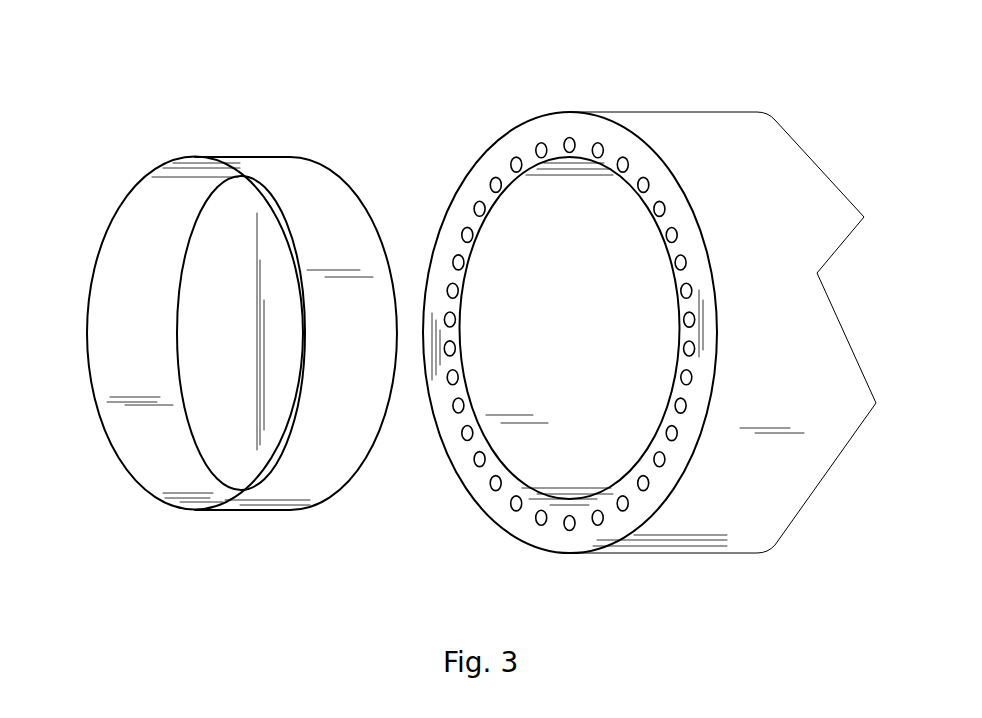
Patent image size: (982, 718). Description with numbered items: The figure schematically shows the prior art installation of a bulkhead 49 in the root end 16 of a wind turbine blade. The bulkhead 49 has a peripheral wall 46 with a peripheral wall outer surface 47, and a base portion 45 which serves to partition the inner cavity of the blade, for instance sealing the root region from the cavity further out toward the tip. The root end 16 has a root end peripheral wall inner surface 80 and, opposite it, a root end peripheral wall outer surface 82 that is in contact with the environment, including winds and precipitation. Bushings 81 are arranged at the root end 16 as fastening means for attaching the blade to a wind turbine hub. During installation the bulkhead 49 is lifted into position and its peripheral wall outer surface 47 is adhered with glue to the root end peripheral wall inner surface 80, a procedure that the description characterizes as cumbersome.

The root end 16 is at (649, 333).
The base portion 45 is at (223, 448).
The peripheral wall 46 is at (138, 240).
The peripheral wall outer surface 47 is at (328, 457).
The bulkhead 49 is at (228, 325).
The root end peripheral wall inner surface 80 is at (530, 197).
The bushings 81 is at (545, 522).
The root end peripheral wall outer surface 82 is at (786, 366).